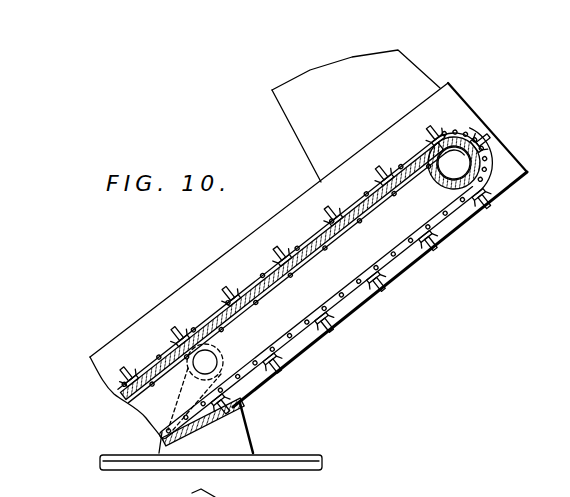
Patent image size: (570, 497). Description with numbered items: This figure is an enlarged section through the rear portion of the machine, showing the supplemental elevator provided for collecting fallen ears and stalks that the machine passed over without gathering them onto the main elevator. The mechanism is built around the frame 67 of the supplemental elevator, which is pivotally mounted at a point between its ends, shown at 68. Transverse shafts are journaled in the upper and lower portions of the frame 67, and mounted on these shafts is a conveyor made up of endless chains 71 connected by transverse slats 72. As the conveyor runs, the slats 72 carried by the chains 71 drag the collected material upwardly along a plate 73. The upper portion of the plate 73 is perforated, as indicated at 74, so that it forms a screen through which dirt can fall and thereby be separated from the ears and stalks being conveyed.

The frame 67 is at (301, 353).
The pivot 68 is at (200, 365).
The endless chains 71 is at (446, 213).
The transverse slats 72 is at (326, 211).
The plate 73 is at (233, 299).
The perforations 74 is at (352, 226).